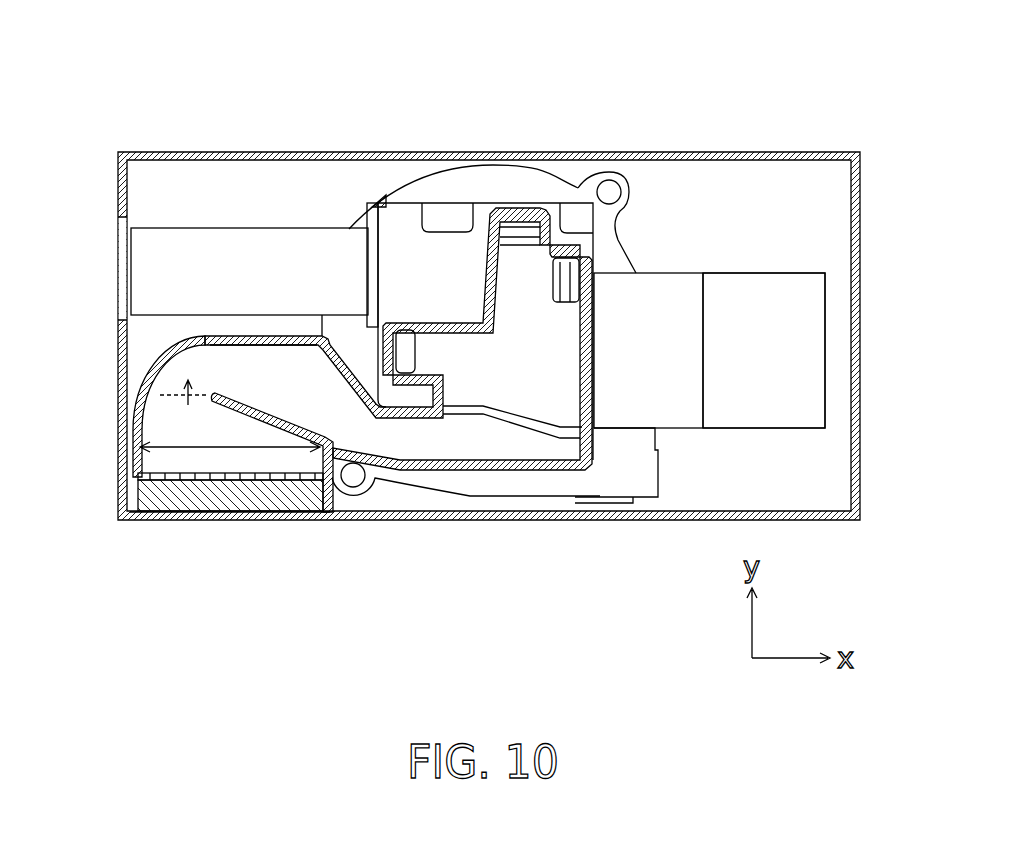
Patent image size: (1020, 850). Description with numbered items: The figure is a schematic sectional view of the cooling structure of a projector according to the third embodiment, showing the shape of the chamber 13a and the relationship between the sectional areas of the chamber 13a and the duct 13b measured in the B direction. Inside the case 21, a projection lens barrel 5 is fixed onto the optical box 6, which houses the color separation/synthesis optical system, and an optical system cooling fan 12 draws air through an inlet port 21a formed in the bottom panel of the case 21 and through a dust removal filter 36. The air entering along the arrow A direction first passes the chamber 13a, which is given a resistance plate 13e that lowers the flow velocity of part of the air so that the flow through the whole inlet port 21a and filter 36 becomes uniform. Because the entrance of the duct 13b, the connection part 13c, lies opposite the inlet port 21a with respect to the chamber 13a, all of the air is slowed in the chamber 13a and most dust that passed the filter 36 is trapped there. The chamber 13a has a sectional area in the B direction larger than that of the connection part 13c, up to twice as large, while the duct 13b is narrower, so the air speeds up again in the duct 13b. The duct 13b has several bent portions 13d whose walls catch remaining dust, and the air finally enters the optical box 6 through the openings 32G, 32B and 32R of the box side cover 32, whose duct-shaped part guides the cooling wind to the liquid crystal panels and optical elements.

The projection lens barrel 5 is at (323, 263).
The optical box 6 is at (725, 407).
The optical system cooling fan 12 is at (612, 263).
The chamber 13a is at (270, 468).
The duct 13b is at (295, 392).
The connection part 13c is at (180, 390).
The bent portions 13d is at (203, 358).
The resistance plate 13e is at (237, 399).
The case 21 is at (668, 518).
The inlet port 21a is at (222, 517).
The box side cover 32 is at (495, 363).
The opening 32G is at (396, 345).
The opening 32B is at (524, 233).
The opening 32R is at (565, 270).
The dust removal filter 36 is at (180, 500).
The inflow direction A is at (190, 396).
The B direction B is at (176, 449).